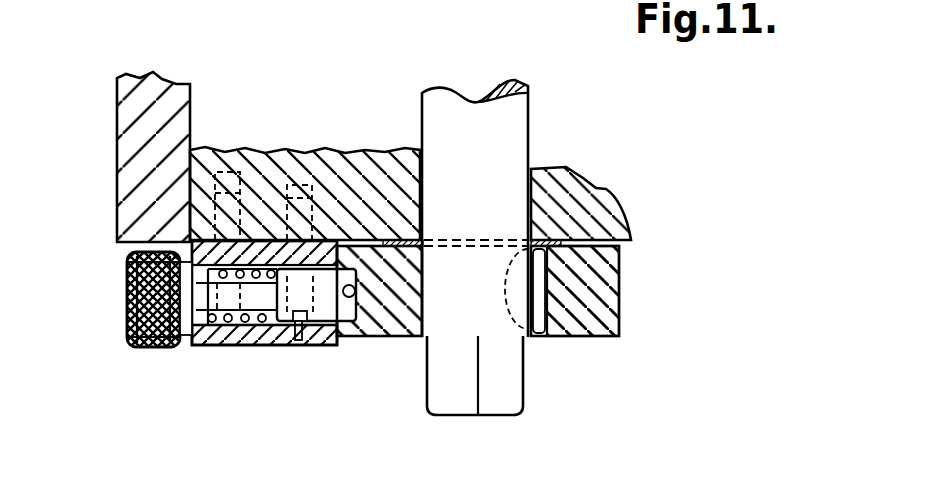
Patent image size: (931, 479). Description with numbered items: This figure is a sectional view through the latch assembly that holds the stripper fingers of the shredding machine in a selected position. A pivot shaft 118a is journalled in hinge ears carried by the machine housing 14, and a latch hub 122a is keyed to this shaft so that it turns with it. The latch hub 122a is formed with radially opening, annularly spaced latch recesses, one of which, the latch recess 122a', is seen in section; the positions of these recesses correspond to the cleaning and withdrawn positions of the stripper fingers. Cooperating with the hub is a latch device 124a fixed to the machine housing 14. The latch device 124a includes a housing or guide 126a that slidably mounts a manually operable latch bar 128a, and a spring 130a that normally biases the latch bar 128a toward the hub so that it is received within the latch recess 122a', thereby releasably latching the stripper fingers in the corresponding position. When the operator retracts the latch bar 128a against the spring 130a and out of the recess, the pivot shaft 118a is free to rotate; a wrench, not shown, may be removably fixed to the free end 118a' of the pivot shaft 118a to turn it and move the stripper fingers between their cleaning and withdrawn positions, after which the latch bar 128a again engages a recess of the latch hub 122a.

The machine housing 14 is at (116, 122).
The spring 130a is at (258, 238).
The pivot shaft 118a is at (522, 208).
The latch recess 122a' is at (384, 293).
The latch hub 122a is at (632, 291).
The free end of pivot shaft 118a' is at (530, 375).
The housing or guide 126a is at (195, 347).
The latch device 124a is at (228, 346).
The latch bar 128a is at (142, 347).